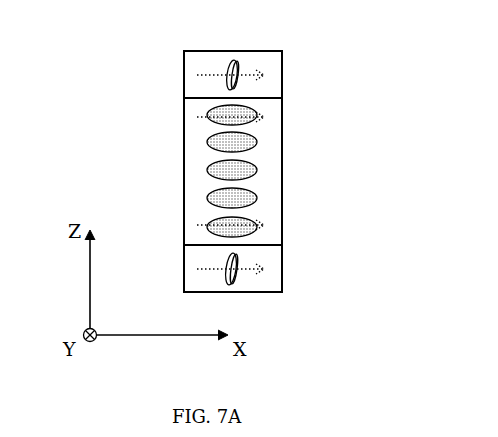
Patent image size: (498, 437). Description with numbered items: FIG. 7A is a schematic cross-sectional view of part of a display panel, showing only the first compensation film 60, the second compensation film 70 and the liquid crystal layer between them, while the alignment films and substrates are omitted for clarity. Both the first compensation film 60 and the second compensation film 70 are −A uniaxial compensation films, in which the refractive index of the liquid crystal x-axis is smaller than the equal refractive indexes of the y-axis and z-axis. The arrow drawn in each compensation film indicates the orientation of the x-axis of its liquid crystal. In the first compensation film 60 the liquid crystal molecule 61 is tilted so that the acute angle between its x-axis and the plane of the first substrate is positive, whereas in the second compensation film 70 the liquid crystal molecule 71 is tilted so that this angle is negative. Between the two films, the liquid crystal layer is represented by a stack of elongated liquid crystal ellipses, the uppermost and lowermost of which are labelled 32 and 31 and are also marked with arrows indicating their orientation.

The second compensation film 70 is at (270, 88).
The liquid crystal molecule 71 is at (240, 63).
The upper light spot 32 is at (207, 116).
The lower light spot 31 is at (207, 224).
The first compensation film 60 is at (270, 258).
The liquid crystal molecule 61 is at (250, 292).